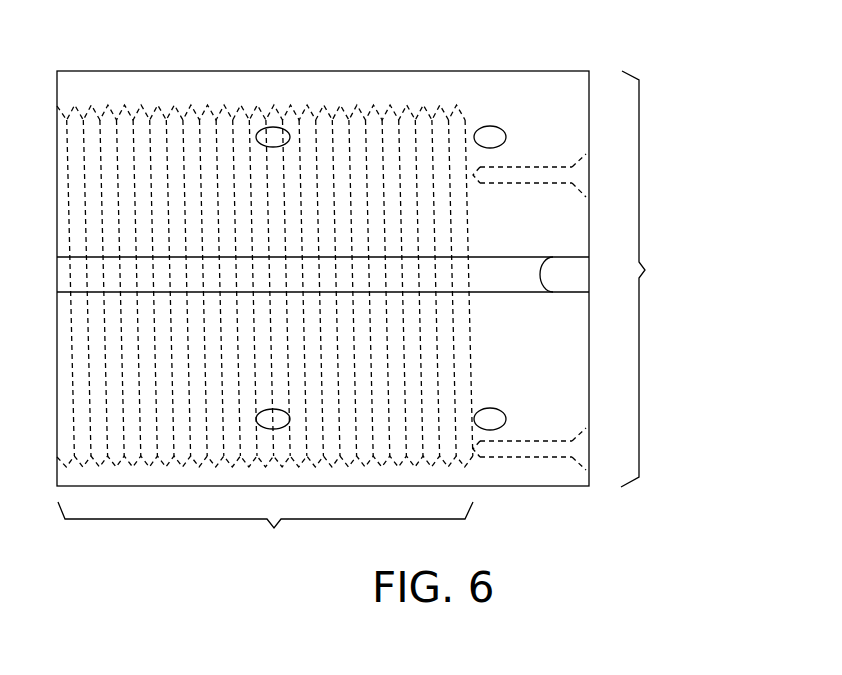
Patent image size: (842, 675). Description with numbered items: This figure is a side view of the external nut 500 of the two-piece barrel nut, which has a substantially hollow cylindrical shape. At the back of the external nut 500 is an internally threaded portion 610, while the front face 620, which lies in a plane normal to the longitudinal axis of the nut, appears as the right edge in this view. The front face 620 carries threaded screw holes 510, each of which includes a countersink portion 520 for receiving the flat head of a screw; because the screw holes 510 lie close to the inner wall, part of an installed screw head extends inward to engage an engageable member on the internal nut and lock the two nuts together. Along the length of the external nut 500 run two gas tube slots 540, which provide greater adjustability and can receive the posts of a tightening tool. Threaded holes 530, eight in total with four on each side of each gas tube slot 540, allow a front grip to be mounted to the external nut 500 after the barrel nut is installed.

The external nut 500 is at (694, 53).
The threaded screw holes 510 is at (501, 184).
The countersink portion 520 is at (583, 156).
The threaded holes 530 is at (488, 127).
The gas tube slots 540 is at (323, 274).
The internally threaded portion 610 is at (265, 531).
The front face 620 is at (658, 279).